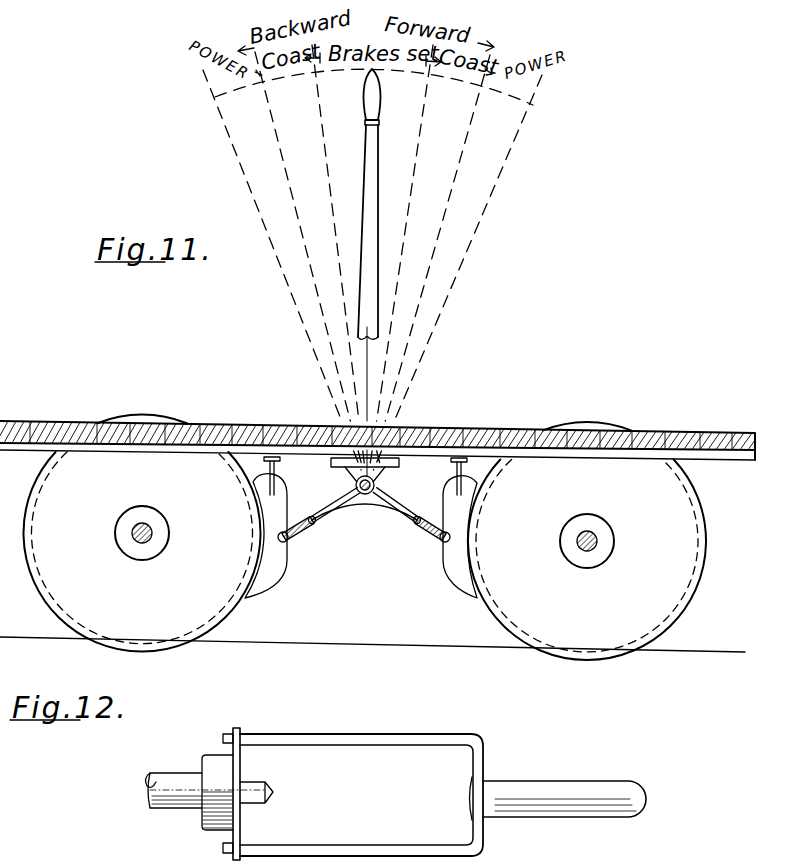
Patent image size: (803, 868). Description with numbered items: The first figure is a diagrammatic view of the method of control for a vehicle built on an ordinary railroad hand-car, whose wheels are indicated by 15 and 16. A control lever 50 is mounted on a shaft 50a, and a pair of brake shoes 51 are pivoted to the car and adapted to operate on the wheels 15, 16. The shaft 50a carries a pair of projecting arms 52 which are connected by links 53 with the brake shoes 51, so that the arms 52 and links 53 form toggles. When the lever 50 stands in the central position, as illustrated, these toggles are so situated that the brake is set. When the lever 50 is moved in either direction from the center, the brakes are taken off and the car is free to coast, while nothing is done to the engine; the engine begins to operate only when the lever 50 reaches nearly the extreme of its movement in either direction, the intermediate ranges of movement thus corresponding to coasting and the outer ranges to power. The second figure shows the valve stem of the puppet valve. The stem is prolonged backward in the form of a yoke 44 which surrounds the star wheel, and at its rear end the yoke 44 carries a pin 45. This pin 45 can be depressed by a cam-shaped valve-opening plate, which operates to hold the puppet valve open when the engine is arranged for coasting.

In FIG. 11, the wheel 15 is at (141, 533).
In FIG. 11, the wheel 16 is at (587, 541).
In FIG. 11, the control lever 50 is at (365, 272).
In FIG. 11, the shaft 50a is at (365, 495).
In FIG. 11, the brake shoes 51 is at (262, 578).
In FIG. 11, the projecting arms 52 is at (330, 507).
In FIG. 11, the links 53 is at (303, 538).
In FIG. 12, the yoke 44 is at (397, 747).
In FIG. 12, the pin 45 is at (589, 790).